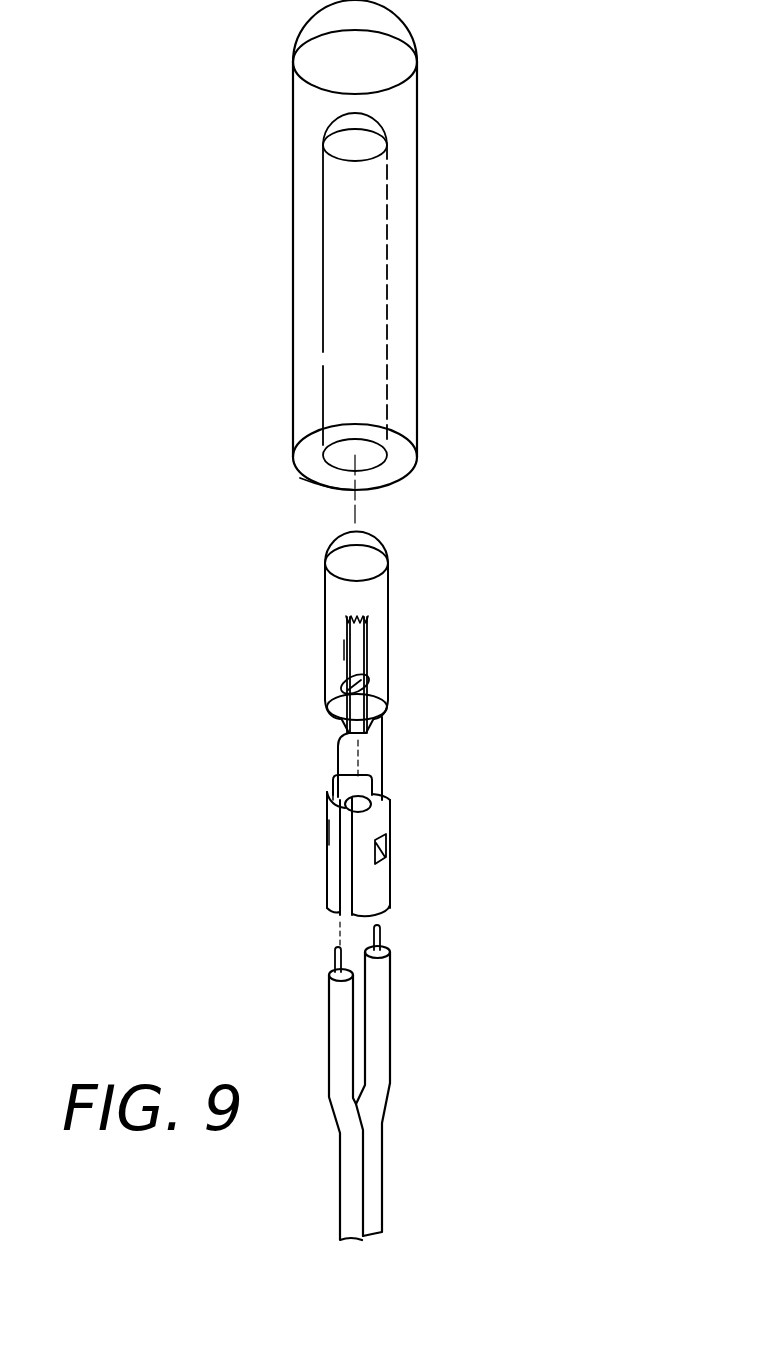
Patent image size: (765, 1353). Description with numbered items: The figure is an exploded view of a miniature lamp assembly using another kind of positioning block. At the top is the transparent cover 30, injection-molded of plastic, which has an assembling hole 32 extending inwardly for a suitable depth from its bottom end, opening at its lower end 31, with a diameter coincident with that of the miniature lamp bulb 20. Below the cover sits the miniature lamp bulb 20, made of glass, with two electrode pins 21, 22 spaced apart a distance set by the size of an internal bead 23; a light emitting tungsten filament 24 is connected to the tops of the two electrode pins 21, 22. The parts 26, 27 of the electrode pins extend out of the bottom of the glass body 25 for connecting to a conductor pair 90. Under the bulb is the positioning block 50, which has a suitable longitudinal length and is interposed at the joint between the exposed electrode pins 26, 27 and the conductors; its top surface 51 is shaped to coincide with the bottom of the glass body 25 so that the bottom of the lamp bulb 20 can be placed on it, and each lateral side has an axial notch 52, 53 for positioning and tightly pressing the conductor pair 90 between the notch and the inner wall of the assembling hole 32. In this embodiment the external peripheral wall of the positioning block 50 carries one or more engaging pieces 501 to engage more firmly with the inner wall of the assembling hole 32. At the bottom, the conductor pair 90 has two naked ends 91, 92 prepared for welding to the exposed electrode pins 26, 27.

The transparent cover 30 is at (417, 103).
The open end of cap 31 is at (313, 482).
The assembling hole 32 is at (368, 456).
The miniature lamp bulb 20 is at (390, 623).
The electrode pin 21 is at (353, 655).
The electrode pin 22 is at (367, 652).
The internal bead 23 is at (332, 697).
The light emitting tungsten filament 24 is at (352, 620).
The glass body 25 is at (375, 718).
The exposed electrode pin part 26 is at (335, 750).
The exposed electrode pin part 27 is at (385, 735).
The positioning block 50 is at (395, 835).
The top surface 51 is at (330, 787).
The axial notch 52 is at (335, 832).
The axial notch 53 is at (383, 789).
The engaging piece 501 is at (393, 866).
The conductor pair 90 is at (380, 1000).
The naked end 91 is at (335, 950).
The naked end 92 is at (383, 935).